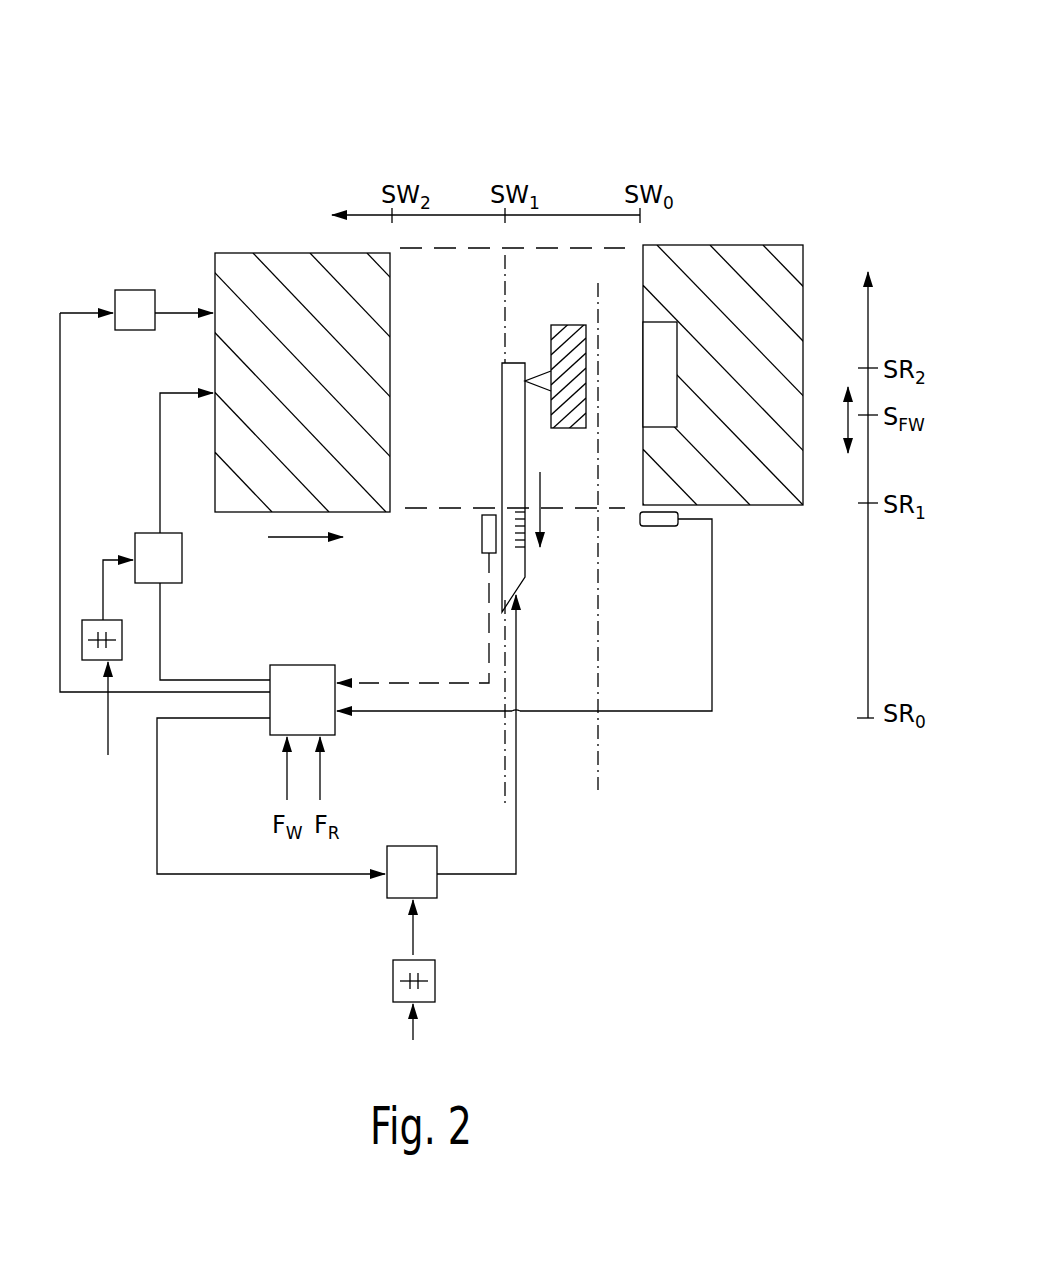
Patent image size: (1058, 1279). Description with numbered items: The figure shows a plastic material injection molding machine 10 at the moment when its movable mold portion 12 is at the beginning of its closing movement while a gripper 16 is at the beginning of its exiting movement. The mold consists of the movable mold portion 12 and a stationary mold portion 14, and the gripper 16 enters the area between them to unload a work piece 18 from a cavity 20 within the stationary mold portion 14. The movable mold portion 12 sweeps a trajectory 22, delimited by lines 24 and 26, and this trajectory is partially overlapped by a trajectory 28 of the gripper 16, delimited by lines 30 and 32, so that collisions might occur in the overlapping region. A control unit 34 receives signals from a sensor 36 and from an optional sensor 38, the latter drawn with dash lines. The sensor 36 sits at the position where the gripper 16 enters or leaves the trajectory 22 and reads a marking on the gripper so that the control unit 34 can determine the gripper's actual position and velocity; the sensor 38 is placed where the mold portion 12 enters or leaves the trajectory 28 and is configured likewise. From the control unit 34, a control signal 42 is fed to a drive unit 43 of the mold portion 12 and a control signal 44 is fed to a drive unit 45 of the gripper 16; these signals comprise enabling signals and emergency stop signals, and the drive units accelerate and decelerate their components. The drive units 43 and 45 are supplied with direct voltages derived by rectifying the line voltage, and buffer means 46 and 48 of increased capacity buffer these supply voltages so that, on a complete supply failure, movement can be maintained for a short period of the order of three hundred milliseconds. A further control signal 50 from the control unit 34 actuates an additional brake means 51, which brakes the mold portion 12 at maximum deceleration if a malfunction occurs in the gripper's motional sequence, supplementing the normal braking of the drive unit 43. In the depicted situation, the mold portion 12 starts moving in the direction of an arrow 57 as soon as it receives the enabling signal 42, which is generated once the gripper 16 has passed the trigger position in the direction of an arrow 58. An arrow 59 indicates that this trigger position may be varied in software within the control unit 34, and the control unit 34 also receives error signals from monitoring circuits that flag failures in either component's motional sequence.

The plastic material injection molding machine 10 is at (769, 133).
The movable mold portion 12 is at (262, 253).
The stationary mold portion 14 is at (757, 245).
The gripper 16 is at (501, 390).
The work piece 18 is at (563, 325).
The cavity 20 is at (657, 343).
The trajectory of movable mold portion 22 is at (455, 415).
The line 24 is at (428, 250).
The line 26 is at (415, 507).
The trajectory of gripper 28 is at (557, 677).
The line 30 is at (502, 786).
The line 32 is at (597, 772).
The control unit 34 is at (306, 663).
The sensor 36 is at (648, 527).
The sensor 38 is at (478, 542).
The control signal 42 is at (160, 653).
The drive unit 43 is at (182, 560).
The control signal 44 is at (198, 878).
The drive unit 45 is at (437, 887).
The buffer means 46 is at (93, 663).
The buffer means 48 is at (435, 985).
The control signal 50 is at (65, 440).
The additional brake means 51 is at (135, 290).
The arrow 57 is at (298, 545).
The arrow 58 is at (543, 495).
The arrow 59 is at (846, 420).